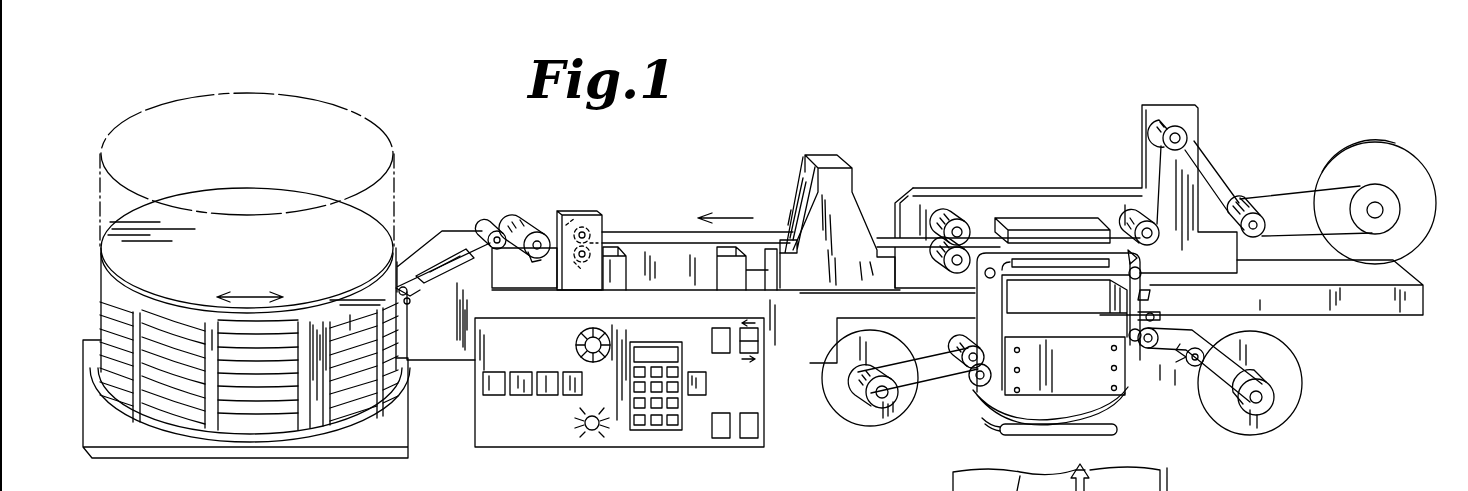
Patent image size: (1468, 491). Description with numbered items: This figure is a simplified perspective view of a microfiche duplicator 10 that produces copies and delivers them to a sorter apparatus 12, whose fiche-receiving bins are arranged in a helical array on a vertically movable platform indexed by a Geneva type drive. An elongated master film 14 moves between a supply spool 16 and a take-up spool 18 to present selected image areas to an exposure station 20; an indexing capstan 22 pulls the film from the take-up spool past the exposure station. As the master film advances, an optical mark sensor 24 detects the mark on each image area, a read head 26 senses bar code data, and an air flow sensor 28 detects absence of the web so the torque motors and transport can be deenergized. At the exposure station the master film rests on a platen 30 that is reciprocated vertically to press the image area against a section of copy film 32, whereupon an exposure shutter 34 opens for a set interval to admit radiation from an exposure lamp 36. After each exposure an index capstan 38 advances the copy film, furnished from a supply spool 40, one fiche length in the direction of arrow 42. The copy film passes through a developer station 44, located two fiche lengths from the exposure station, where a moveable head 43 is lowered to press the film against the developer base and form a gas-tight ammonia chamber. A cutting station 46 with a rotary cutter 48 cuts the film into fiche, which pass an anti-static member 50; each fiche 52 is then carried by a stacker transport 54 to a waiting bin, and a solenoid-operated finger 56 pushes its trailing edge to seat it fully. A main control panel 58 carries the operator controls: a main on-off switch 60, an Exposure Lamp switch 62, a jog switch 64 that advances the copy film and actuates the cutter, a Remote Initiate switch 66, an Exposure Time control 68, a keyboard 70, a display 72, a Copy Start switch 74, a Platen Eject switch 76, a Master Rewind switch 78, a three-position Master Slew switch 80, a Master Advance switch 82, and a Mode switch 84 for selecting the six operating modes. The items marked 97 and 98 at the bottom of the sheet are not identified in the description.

The duplicator 10 is at (1038, 146).
The sorter apparatus 12 is at (333, 90).
The master film 14 is at (941, 367).
The supply spool 16 is at (1285, 368).
The take-up spool 18 is at (900, 413).
The exposure station 20 is at (1059, 206).
The indexing capstan 22 is at (967, 342).
The optical mark sensor 24 is at (1137, 252).
The read head 26 is at (1148, 295).
The air flow sensor 28 is at (1138, 312).
The platen 30 is at (1015, 267).
The copy film 32 is at (902, 240).
The exposure shutter 34 is at (1112, 407).
The exposure lamp 36 is at (1117, 430).
The index capstan 38 is at (580, 207).
The supply spool 40 is at (1363, 150).
The arrow 42 is at (722, 218).
The moveable head 43 is at (797, 205).
The developer station 44 is at (849, 138).
The cutting station 46 is at (528, 195).
The rotary cutter 48 is at (526, 251).
The anti-static member 50 is at (483, 230).
The fiche 52 is at (442, 257).
The stacker transport 54 is at (407, 267).
The solenoid-operated finger 56 is at (407, 297).
The main control panel 58 is at (633, 393).
The main on-off switch 60 is at (502, 368).
The Exposure Lamp switch 62 is at (517, 397).
The switch 64 is at (550, 370).
The Remote Initiate switch 66 is at (565, 397).
The Exposure Time control 68 is at (590, 327).
The keyboard 70 is at (655, 423).
The display 72 is at (663, 347).
The Copy Start switch 74 is at (707, 379).
The Platen Eject switch 76 is at (723, 332).
The Master Rewind switch 78 is at (718, 438).
The Master Slew switch 80 is at (753, 332).
The Master Advance switch 82 is at (758, 424).
The Mode switch 84 is at (592, 430).
The conveyor 97 is at (1180, 489).
The conveyor 98 is at (1060, 477).